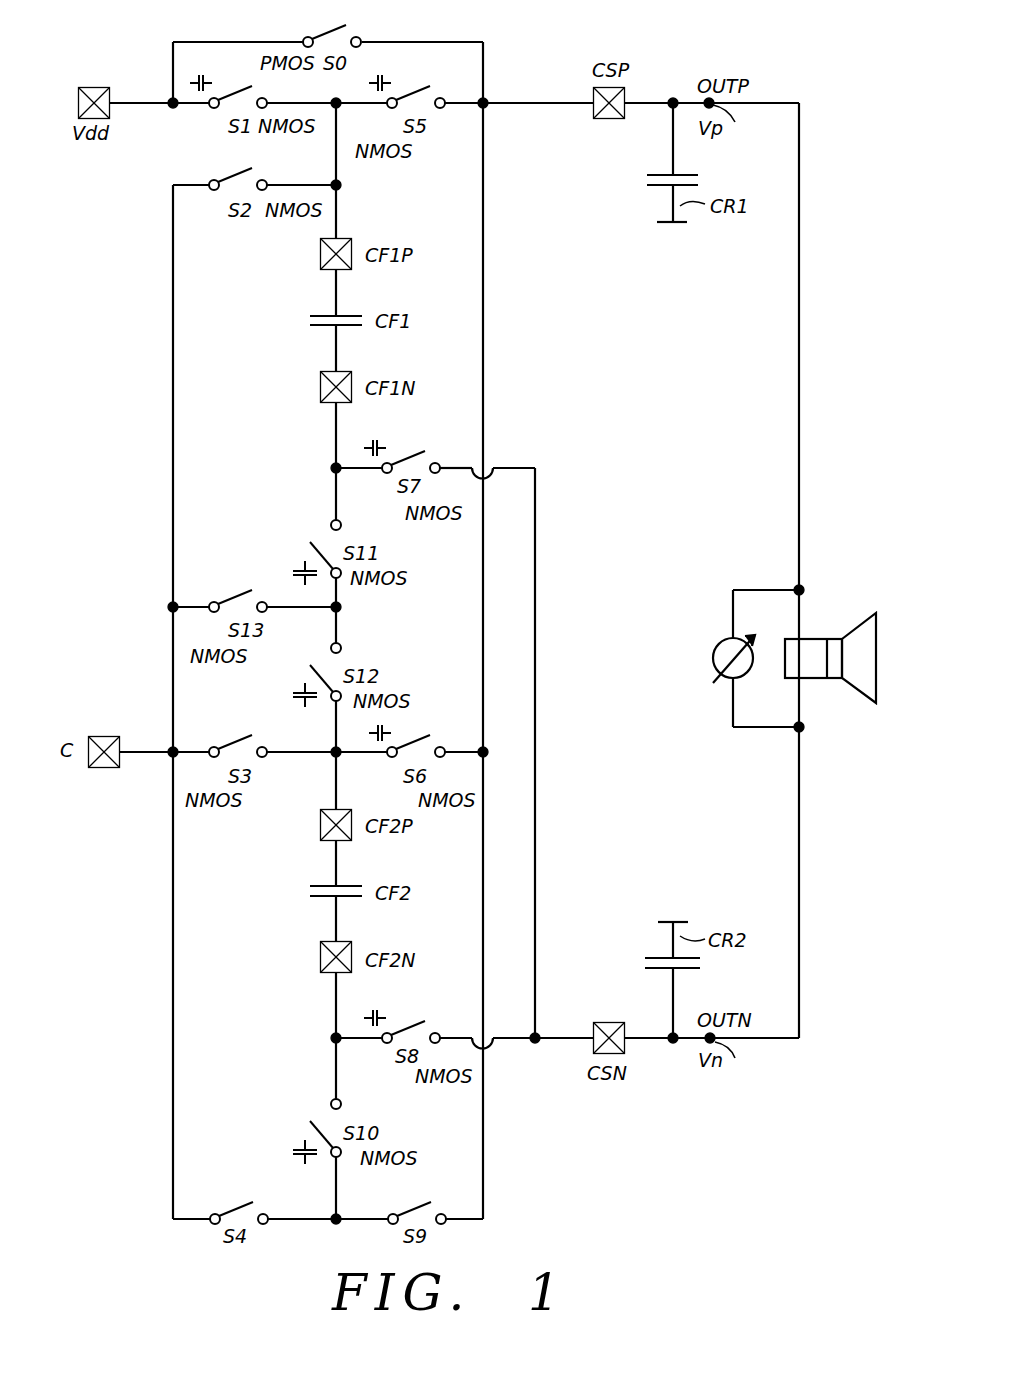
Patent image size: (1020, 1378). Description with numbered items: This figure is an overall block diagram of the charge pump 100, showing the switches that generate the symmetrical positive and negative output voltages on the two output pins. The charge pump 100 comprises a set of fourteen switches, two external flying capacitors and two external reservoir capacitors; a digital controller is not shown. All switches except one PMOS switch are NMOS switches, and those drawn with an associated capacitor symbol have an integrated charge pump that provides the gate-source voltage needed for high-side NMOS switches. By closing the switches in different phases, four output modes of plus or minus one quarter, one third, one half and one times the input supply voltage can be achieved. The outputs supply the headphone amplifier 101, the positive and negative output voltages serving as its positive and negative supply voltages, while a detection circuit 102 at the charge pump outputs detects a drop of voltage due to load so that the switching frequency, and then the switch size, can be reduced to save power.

The charge pump 100 is at (815, 668).
The headphone amplifier 101 is at (862, 638).
The detection circuit 102 is at (722, 686).